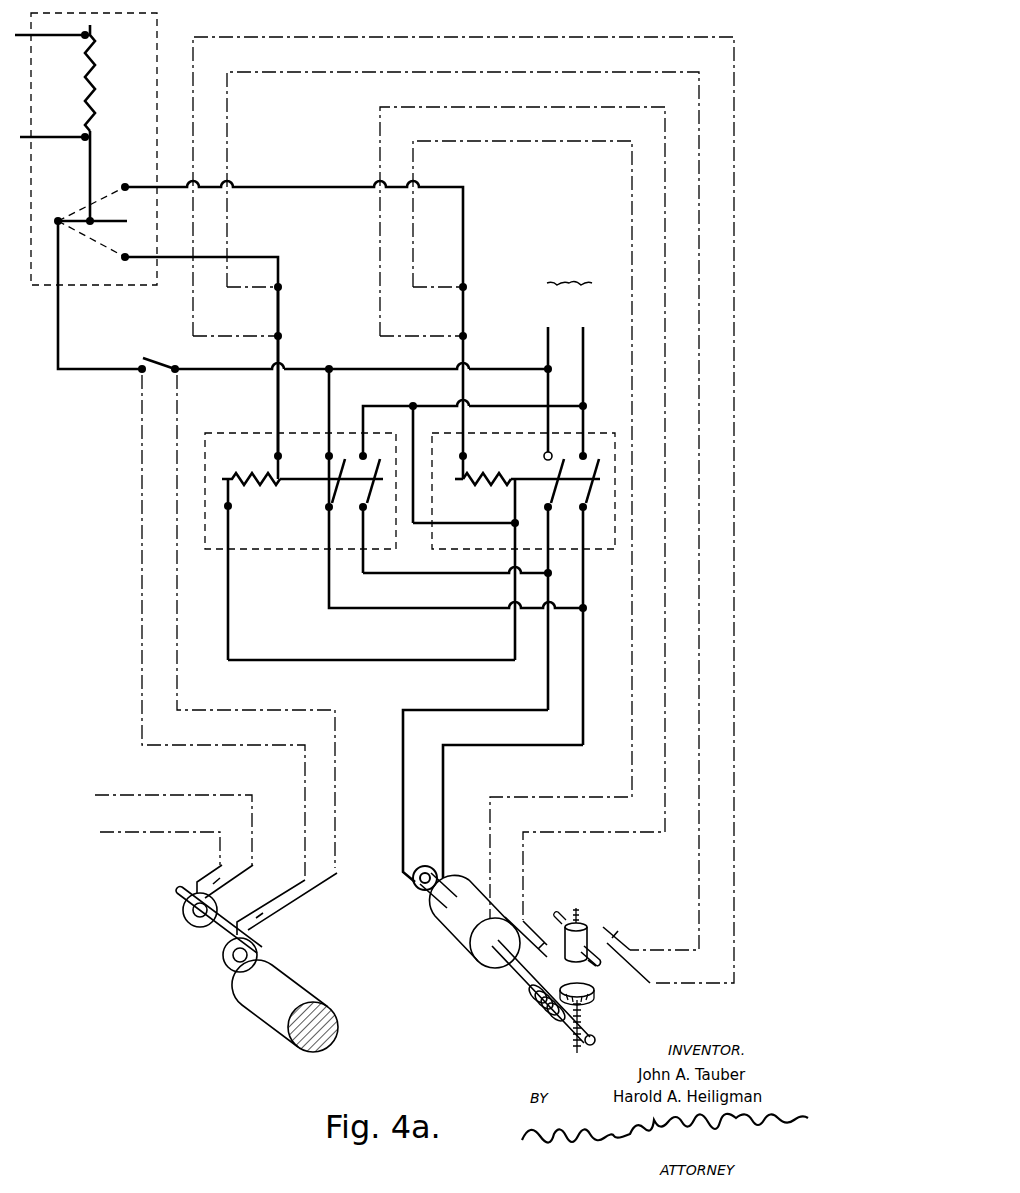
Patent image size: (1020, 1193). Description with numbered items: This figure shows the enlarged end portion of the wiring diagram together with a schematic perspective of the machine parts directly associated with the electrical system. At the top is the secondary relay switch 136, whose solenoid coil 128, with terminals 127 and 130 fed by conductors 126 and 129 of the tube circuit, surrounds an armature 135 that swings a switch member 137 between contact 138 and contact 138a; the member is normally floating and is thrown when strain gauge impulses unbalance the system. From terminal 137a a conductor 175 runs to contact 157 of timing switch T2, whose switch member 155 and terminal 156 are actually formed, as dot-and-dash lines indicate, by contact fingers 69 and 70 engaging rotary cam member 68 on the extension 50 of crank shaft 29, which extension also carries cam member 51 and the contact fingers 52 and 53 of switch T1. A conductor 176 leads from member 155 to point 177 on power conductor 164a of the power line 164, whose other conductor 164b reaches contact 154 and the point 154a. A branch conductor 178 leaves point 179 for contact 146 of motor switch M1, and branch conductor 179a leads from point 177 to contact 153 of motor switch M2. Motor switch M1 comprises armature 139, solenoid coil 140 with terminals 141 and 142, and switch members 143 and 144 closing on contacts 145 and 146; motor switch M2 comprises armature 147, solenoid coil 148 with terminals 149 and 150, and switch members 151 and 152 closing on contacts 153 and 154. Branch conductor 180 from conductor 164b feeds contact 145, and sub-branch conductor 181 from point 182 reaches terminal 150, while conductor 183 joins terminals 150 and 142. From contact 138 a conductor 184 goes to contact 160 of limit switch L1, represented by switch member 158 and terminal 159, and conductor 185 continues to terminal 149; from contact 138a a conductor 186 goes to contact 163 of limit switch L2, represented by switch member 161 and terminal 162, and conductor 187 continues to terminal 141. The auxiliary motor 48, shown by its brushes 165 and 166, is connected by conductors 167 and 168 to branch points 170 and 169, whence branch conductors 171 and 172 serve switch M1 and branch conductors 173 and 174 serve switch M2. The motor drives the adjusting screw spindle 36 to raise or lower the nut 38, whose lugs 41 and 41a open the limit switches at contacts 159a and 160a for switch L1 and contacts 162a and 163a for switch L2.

The conductor 129 is at (50, 30).
The secondary relay switch 136 is at (171, 25).
The terminal of solenoid coil 130 is at (84, 36).
The solenoid coil 128 is at (98, 82).
The conductor 126 is at (50, 136).
The armature 135 is at (95, 150).
The terminal of solenoid coil 127 is at (28, 175).
The contact 138 is at (125, 186).
The switch member 137 is at (78, 218).
The terminal 137a is at (58, 222).
The contact 138a is at (124, 258).
The conductor 175 is at (58, 322).
The contact 157 is at (140, 366).
The switch member 155 is at (162, 360).
The terminal 156 is at (176, 372).
The timing switch T2 is at (136, 385).
The conductor 186 is at (210, 284).
The contact 163 is at (276, 288).
The limit switch L2 is at (294, 295).
The switch member 161 is at (283, 312).
The terminal 162 is at (282, 338).
The conductor 187 is at (276, 400).
The branch conductor 178 is at (328, 398).
The point 179 is at (333, 369).
The conductor 176 is at (392, 368).
The point 177 is at (545, 370).
The conductor 184 is at (262, 185).
The contact 160 is at (458, 290).
The limit switch L1 is at (478, 297).
The switch member 158 is at (468, 312).
The terminal 159 is at (468, 338).
The point 182 is at (412, 404).
The conductor 185 is at (460, 388).
The branch conductor 179a is at (538, 426).
The branch conductor 180 is at (418, 410).
The sub-branch conductor 181 is at (407, 512).
The power line 164 is at (570, 282).
The power conductor 164a is at (550, 336).
The power conductor 164b is at (585, 362).
The junction 154a is at (586, 404).
The contact 154 is at (586, 448).
The motor switch M1 is at (224, 564).
The contact 146 is at (330, 452).
The contact 145 is at (366, 452).
The terminal 141 is at (274, 456).
The armature 139 is at (300, 474).
The solenoid coil 140 is at (236, 470).
The switch member 143 is at (328, 488).
The terminal 142 is at (230, 506).
The switch member 144 is at (364, 507).
The motor switch M2 is at (608, 562).
The terminal 149 is at (466, 458).
The armature 147 is at (440, 486).
The solenoid coil 148 is at (490, 488).
The contact 153 is at (548, 456).
The switch member 151 is at (552, 493).
The switch member 152 is at (584, 500).
The terminal 150 is at (512, 524).
The branch conductor 173 is at (550, 524).
The branch conductor 172 is at (438, 574).
The branch point 169 is at (552, 574).
The branch conductor 171 is at (438, 610).
The branch conductor 174 is at (586, 608).
The branch point 170 is at (582, 616).
The conductor 183 is at (318, 659).
The conductor 168 is at (402, 790).
The conductor 167 is at (444, 796).
The commutator brush 166 is at (424, 866).
The commutator brush 165 is at (432, 894).
The auxiliary motor 48 is at (458, 940).
The contact 159a is at (523, 998).
The adjusting screw spindle 36 is at (540, 976).
The lug 41 is at (576, 922).
The nut 38 is at (598, 938).
The lug 41a is at (605, 967).
The contact 160a is at (544, 932).
The contact 163a is at (636, 952).
The contact 162a is at (648, 983).
The contact finger 52 is at (215, 870).
The contact finger 53 is at (244, 876).
The cam member 51 is at (210, 905).
The contact finger 69 is at (261, 903).
The contact finger 70 is at (284, 900).
The cam member 68 is at (256, 944).
The shaft extension 50 is at (212, 936).
The timing switch T1 is at (183, 933).
The crank shaft 29 is at (284, 1022).